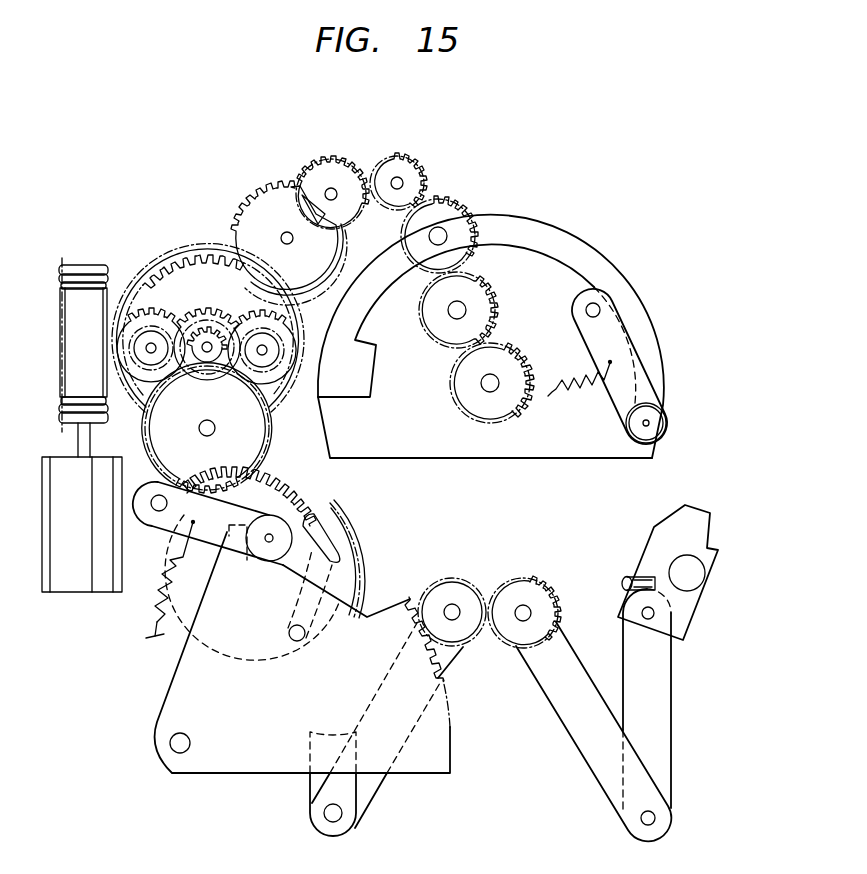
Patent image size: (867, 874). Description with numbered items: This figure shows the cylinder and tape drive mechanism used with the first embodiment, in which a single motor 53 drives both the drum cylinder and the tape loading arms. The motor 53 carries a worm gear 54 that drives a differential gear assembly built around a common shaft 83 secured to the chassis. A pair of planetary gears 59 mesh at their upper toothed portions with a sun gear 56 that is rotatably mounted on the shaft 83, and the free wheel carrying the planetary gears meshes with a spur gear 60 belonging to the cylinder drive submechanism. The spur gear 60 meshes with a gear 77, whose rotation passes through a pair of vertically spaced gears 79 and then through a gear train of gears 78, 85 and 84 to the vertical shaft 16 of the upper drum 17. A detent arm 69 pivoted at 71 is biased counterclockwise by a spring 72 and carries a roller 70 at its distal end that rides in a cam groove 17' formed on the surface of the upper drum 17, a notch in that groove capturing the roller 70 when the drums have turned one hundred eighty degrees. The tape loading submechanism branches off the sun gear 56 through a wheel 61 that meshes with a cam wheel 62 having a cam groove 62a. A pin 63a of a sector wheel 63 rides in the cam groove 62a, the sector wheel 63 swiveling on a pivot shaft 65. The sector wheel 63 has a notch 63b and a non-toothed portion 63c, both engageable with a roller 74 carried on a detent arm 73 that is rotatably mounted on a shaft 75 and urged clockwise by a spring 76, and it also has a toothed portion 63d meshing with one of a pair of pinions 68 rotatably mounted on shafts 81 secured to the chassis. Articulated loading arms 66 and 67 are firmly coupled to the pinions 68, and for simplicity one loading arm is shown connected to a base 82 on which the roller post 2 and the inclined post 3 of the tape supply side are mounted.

The roller post 2 is at (703, 574).
The inclined post 3 is at (622, 578).
The vertical shaft 16 is at (481, 384).
The upper drum 17 is at (491, 324).
The cam groove 17' is at (619, 248).
The motor 53 is at (72, 600).
The worm gear 54 is at (82, 264).
The sun gear 56 is at (207, 325).
The planetary gears 59 is at (132, 360).
The spur gear 60 is at (262, 190).
The wheel 61 is at (266, 458).
The cam wheel 62 is at (343, 523).
The cam groove 62a is at (308, 516).
The sector wheel 63 is at (210, 770).
The pin 63a is at (297, 642).
The notch 63b is at (252, 559).
The non-toothed portion 63c is at (363, 605).
The toothed portion 63d is at (455, 742).
The pivot shaft 65 is at (180, 760).
The loading arm 66 is at (572, 718).
The loading arm 67 is at (672, 705).
The pinions 68 is at (506, 650).
The detent arm 69 is at (650, 367).
The roller 70 is at (668, 432).
The pivot 71 is at (602, 310).
The spring 72 is at (585, 360).
The detent arm 73 is at (156, 496).
The roller 74 is at (335, 563).
The shaft 75 is at (162, 518).
The spring 76 is at (162, 602).
The gear 77 is at (325, 160).
The gear 78 is at (455, 210).
The gears 79 is at (398, 157).
The shafts 81 is at (520, 605).
The base 82 is at (710, 524).
The common shaft 83 is at (207, 372).
The spur gear 84 is at (513, 423).
The spur gear 85 is at (498, 334).